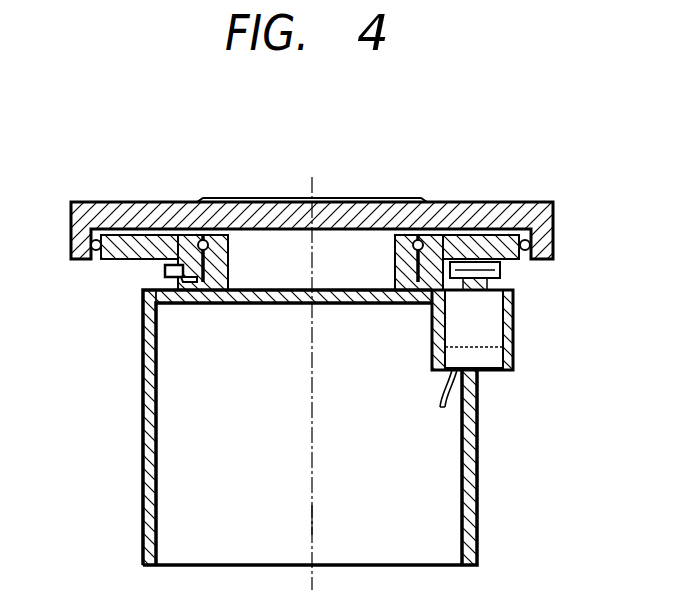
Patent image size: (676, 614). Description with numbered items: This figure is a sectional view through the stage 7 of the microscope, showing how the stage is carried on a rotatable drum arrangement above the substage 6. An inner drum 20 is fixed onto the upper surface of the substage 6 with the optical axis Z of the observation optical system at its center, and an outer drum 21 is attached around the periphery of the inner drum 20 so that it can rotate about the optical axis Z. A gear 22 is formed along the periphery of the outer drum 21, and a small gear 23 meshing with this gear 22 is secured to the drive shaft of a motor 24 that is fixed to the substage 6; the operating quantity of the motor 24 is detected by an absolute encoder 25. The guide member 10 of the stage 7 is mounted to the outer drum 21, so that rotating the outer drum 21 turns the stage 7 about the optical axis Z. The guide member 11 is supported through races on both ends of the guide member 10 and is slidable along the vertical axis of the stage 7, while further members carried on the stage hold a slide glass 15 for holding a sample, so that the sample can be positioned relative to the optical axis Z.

The substage 6 is at (477, 513).
The stage 7 is at (440, 182).
The guide member 10 is at (487, 242).
The guide member 11 is at (142, 207).
The slide glass 15 is at (332, 207).
The inner drum 20 is at (217, 208).
The outer drum 21 is at (175, 278).
The gear 22 is at (163, 272).
The small gear 23 is at (493, 273).
The motor 24 is at (490, 321).
The absolute encoder 25 is at (490, 358).
The optical axis Z is at (318, 520).